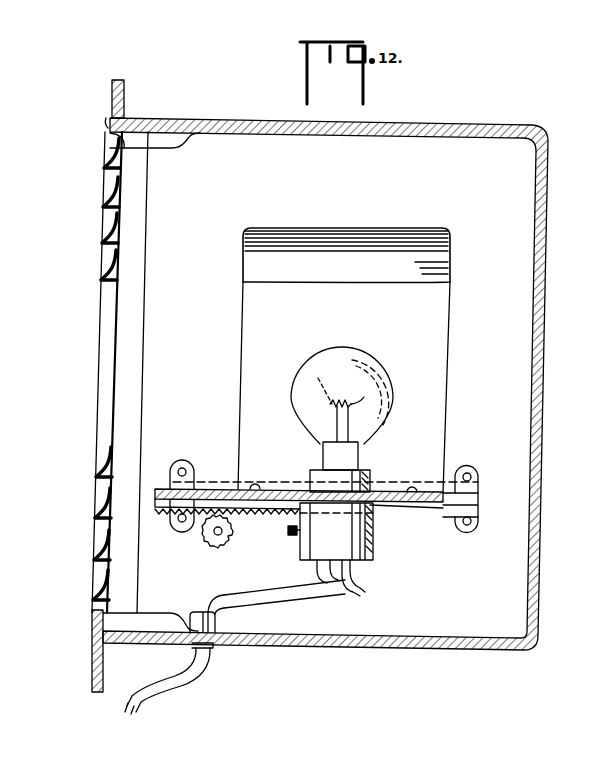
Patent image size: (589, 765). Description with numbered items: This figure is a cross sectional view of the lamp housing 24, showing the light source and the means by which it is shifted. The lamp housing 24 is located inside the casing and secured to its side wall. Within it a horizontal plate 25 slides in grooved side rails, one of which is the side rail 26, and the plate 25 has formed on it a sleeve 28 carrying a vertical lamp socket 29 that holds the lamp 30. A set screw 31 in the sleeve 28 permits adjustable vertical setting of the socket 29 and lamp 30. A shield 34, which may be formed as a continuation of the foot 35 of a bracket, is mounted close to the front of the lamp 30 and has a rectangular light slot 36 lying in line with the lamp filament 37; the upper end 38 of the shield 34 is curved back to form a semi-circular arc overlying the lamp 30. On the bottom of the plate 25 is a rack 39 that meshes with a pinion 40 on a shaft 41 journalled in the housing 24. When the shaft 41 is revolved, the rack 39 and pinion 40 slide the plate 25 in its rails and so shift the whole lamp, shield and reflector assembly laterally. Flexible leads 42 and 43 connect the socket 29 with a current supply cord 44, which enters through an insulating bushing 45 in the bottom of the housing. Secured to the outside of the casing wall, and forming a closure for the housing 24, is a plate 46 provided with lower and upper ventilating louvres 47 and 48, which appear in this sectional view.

The lamp housing 24 is at (546, 183).
The horizontal plate 25 is at (408, 505).
The grooved side rail 26 is at (481, 482).
The sleeve 28 is at (375, 546).
The lamp socket 29 is at (372, 478).
The lamp 30 is at (386, 373).
The set screw 31 is at (290, 537).
The shield 34 is at (448, 314).
The foot 35 is at (284, 480).
The light slot 36 is at (331, 385).
The lamp filament 37 is at (359, 392).
The upper end of shield 38 is at (363, 230).
The rack 39 is at (157, 514).
The pinion 40 is at (217, 545).
The shaft 41 is at (214, 534).
The flexible lead 42 is at (356, 584).
The flexible lead 43 is at (290, 590).
The current supply cord 44 is at (200, 664).
The insulating bushing 45 is at (216, 622).
The plate 46 is at (103, 373).
The lower ventilating louvres 47 is at (95, 598).
The upper ventilating louvres 48 is at (112, 204).